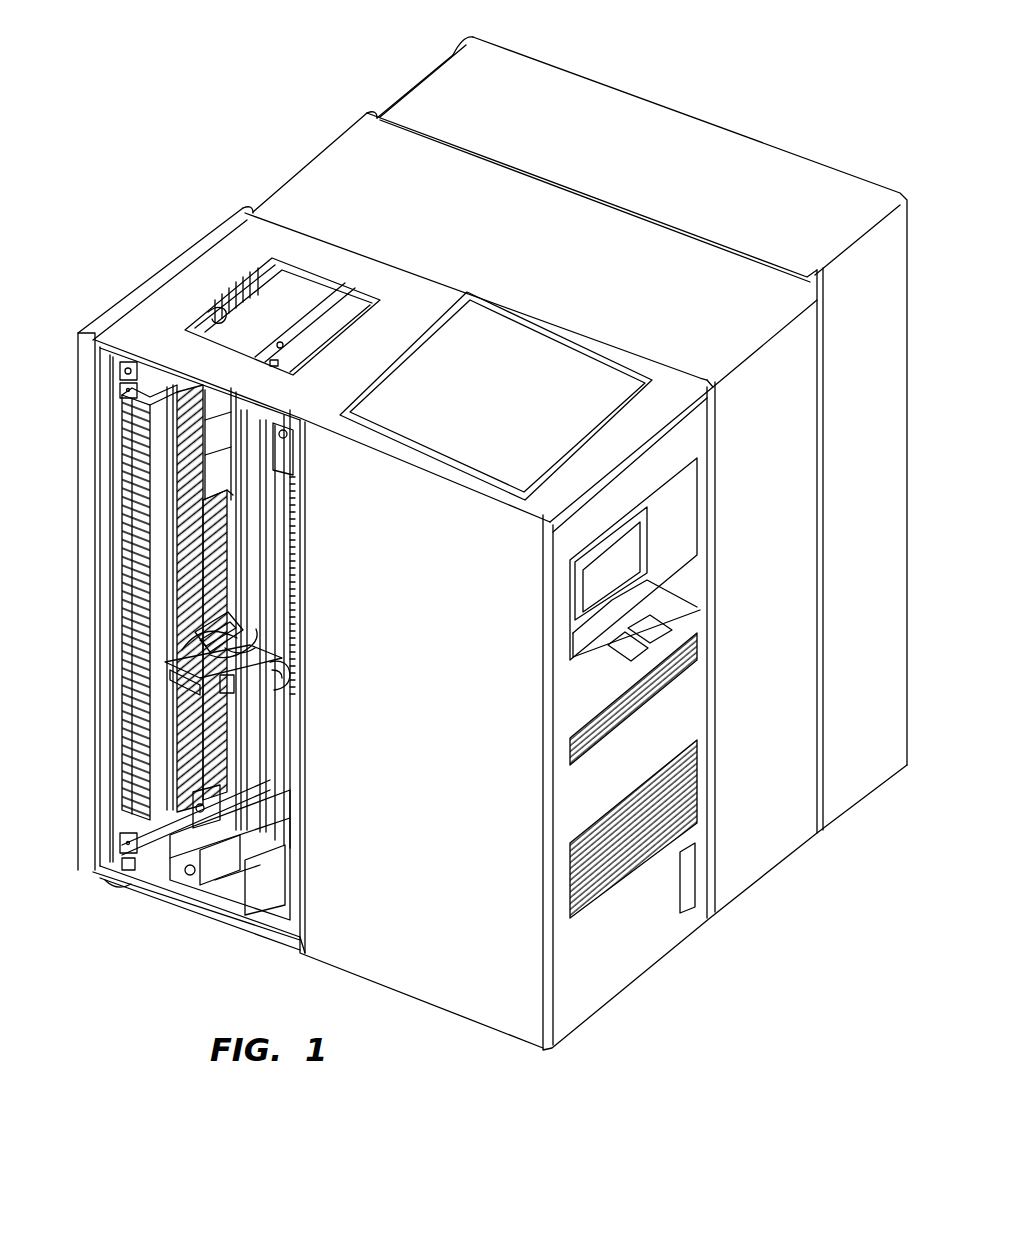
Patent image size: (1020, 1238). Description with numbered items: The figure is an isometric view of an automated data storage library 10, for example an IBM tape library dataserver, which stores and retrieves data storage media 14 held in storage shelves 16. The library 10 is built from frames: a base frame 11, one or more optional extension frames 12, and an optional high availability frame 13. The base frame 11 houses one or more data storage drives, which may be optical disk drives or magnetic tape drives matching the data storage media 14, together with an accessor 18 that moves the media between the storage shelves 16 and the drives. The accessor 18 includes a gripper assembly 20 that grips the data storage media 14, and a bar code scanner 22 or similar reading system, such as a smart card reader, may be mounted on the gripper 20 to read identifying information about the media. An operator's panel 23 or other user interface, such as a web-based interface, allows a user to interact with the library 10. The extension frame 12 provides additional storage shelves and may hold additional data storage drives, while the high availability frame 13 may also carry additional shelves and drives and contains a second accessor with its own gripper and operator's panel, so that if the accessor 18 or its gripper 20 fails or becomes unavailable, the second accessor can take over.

The automated data storage library 10 is at (145, 199).
The base frame 11 is at (366, 362).
The extension frame 12 is at (505, 240).
The high availability frame 13 is at (626, 90).
The data storage media 14 is at (140, 426).
The storage shelves 16 is at (86, 587).
The accessor 18 is at (213, 850).
The gripper assembly 20 is at (275, 680).
The bar code scanner 22 is at (228, 610).
The operator's panel 23 is at (673, 618).